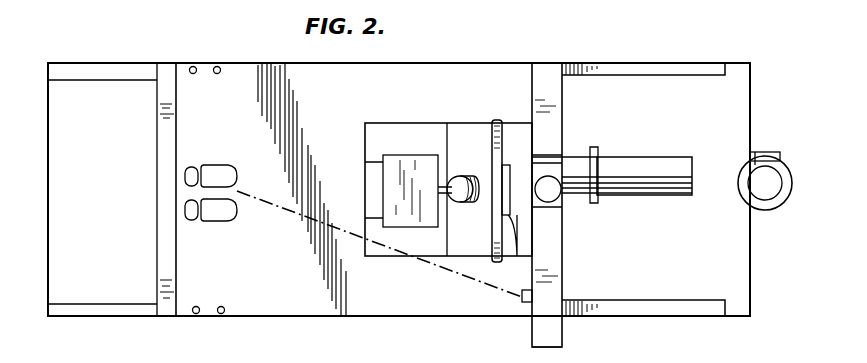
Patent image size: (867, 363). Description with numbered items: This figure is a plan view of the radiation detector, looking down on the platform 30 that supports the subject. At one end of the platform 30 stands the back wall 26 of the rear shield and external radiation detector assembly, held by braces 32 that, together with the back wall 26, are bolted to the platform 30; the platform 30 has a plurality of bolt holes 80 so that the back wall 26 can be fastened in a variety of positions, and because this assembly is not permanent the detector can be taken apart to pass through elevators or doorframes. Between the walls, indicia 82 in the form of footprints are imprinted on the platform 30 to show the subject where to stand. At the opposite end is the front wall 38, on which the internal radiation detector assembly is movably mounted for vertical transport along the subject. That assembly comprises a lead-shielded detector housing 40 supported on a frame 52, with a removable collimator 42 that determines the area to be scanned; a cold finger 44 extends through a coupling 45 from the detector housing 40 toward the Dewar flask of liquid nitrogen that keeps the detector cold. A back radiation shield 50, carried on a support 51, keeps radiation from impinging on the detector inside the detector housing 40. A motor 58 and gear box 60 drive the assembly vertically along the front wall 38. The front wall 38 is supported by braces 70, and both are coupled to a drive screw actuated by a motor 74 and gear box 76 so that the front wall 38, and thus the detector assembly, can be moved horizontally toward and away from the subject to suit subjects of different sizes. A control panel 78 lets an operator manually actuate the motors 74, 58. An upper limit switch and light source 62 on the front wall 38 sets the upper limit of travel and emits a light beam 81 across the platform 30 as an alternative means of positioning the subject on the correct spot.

The back wall 26 is at (166, 196).
The platform 30 is at (406, 317).
The braces 32 is at (100, 70).
The front wall 38 is at (541, 63).
The detector housing 40 is at (410, 158).
The removable collimator 42 is at (367, 196).
The cold finger 44 is at (452, 203).
The coupling 45 is at (466, 175).
The back radiation shield 50 is at (512, 203).
The support 51 is at (520, 113).
The frame 52 is at (374, 127).
The motor 58 is at (635, 157).
The gear box 60 is at (560, 197).
The upper limit switch and light source 62 is at (525, 303).
The braces 70 is at (648, 58).
The motor 74 is at (768, 212).
The gear box 76 is at (758, 152).
The control panel 78 is at (565, 338).
The bolt holes 80 is at (216, 65).
The light beam 81 is at (424, 262).
The indicia 82 is at (224, 178).